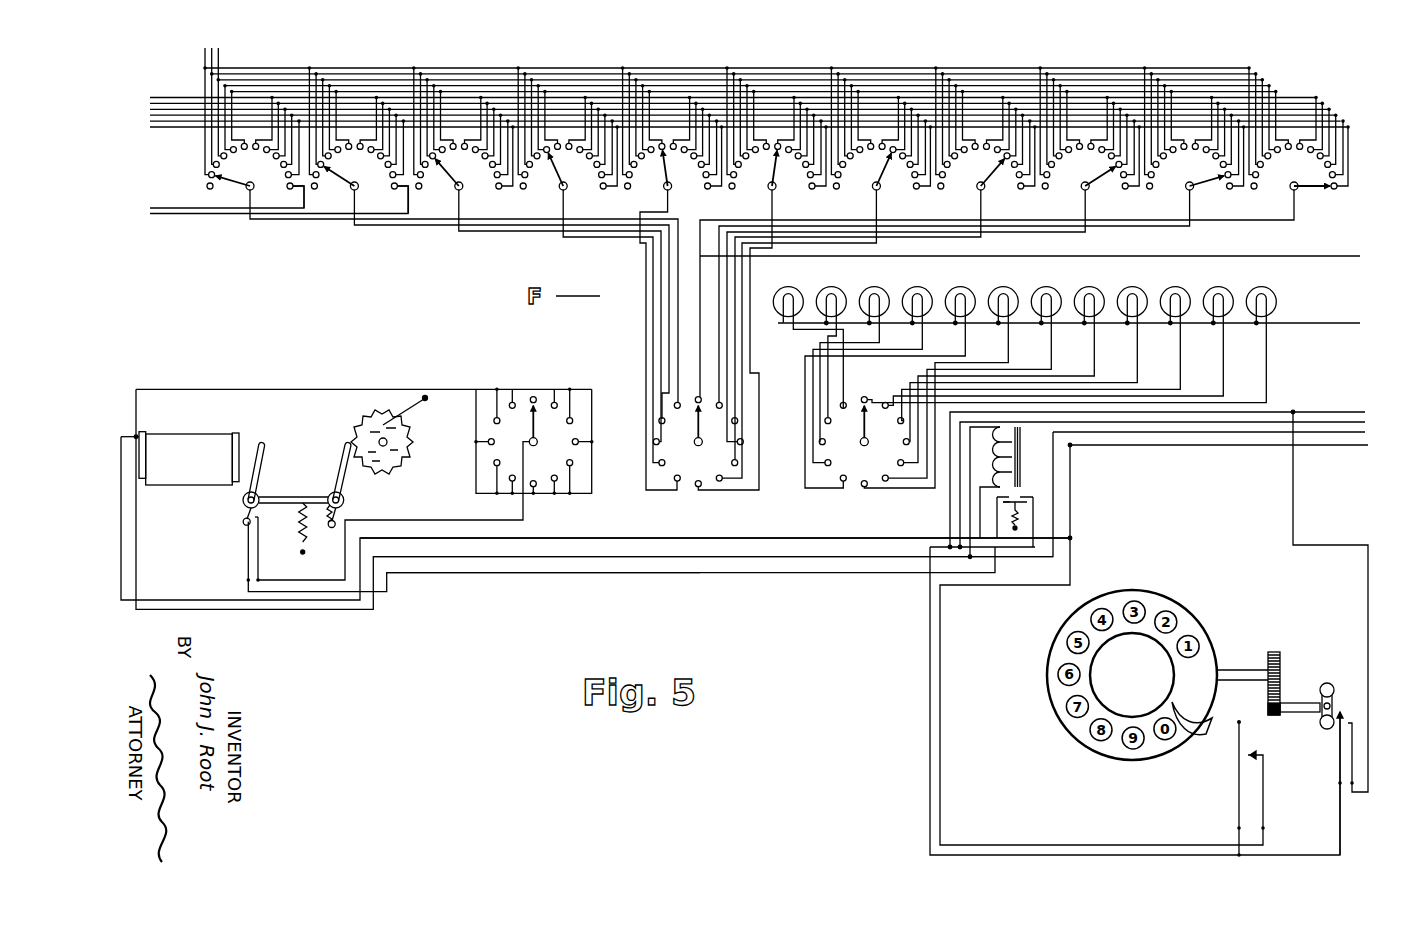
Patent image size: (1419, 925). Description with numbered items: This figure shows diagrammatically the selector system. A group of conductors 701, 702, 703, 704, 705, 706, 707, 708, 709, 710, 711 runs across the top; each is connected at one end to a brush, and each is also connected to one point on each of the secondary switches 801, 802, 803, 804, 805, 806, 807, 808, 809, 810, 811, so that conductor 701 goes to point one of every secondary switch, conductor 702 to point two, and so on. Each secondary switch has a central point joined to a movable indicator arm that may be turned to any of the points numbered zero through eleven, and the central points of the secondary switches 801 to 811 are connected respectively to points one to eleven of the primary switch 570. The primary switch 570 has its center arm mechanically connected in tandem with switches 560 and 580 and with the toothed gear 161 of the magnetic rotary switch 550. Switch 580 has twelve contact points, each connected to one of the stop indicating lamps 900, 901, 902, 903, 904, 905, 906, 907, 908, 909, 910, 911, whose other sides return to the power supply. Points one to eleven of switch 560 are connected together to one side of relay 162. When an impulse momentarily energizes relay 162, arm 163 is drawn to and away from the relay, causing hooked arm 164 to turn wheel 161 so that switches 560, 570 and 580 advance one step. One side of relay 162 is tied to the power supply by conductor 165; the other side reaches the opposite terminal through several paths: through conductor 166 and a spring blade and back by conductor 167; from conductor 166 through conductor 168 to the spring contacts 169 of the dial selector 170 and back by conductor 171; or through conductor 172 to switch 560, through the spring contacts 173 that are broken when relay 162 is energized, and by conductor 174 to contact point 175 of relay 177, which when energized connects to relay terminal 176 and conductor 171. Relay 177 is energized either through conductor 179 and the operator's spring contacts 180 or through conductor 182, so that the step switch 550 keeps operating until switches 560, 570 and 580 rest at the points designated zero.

The conductor 701 is at (205, 56).
The conductor 702 is at (212, 48).
The conductor 703 is at (218, 62).
The conductor 704 is at (225, 86).
The conductor 705 is at (232, 92).
The conductor 706 is at (160, 97).
The conductor 707 is at (150, 103).
The conductor 708 is at (150, 109).
The conductor 709 is at (150, 115).
The conductor 710 is at (150, 208).
The conductor 711 is at (150, 214).
The secondary switch 801 is at (246, 190).
The secondary switch 802 is at (351, 190).
The secondary switch 803 is at (455, 190).
The secondary switch 804 is at (559, 190).
The secondary switch 805 is at (663, 190).
The secondary switch 806 is at (768, 190).
The secondary switch 807 is at (872, 190).
The secondary switch 808 is at (976, 190).
The secondary switch 809 is at (1080, 190).
The secondary switch 810 is at (1186, 190).
The secondary switch 811 is at (1290, 190).
The stop indicating lamp 900 is at (797, 291).
The stop indicating lamp 901 is at (840, 291).
The stop indicating lamp 902 is at (883, 291).
The stop indicating lamp 903 is at (926, 291).
The stop indicating lamp 904 is at (969, 291).
The stop indicating lamp 905 is at (1012, 291).
The stop indicating lamp 906 is at (1055, 291).
The stop indicating lamp 907 is at (1098, 291).
The stop indicating lamp 908 is at (1141, 291).
The stop indicating lamp 909 is at (1184, 291).
The stop indicating lamp 910 is at (1227, 291).
The stop indicating lamp 911 is at (1270, 291).
The switch 560 is at (548, 470).
The primary switch 570 is at (695, 470).
The switch 580 is at (861, 470).
The toothed gear 161 is at (410, 437).
The relay 162 is at (188, 434).
The arm 163 is at (262, 462).
The hooked arm 164 is at (342, 484).
The conductor 165 is at (590, 558).
The conductor 166 is at (666, 538).
The conductor 167 is at (1356, 433).
The conductor 168 is at (1293, 488).
The spring contacts 169 is at (1342, 730).
The dial selector 170 is at (1238, 670).
The conductor 171 is at (930, 547).
The conductor 172 is at (326, 389).
The spring contacts 173 is at (246, 540).
The conductor 174 is at (512, 574).
The contact point 175 is at (1000, 500).
The relay terminal 176 is at (1030, 495).
The relay 177 is at (1018, 450).
The conductor 179 is at (932, 672).
The operator's spring contacts 180 is at (1246, 758).
The conductor 182 is at (1160, 446).
The magnetic rotary switch 550 is at (316, 480).